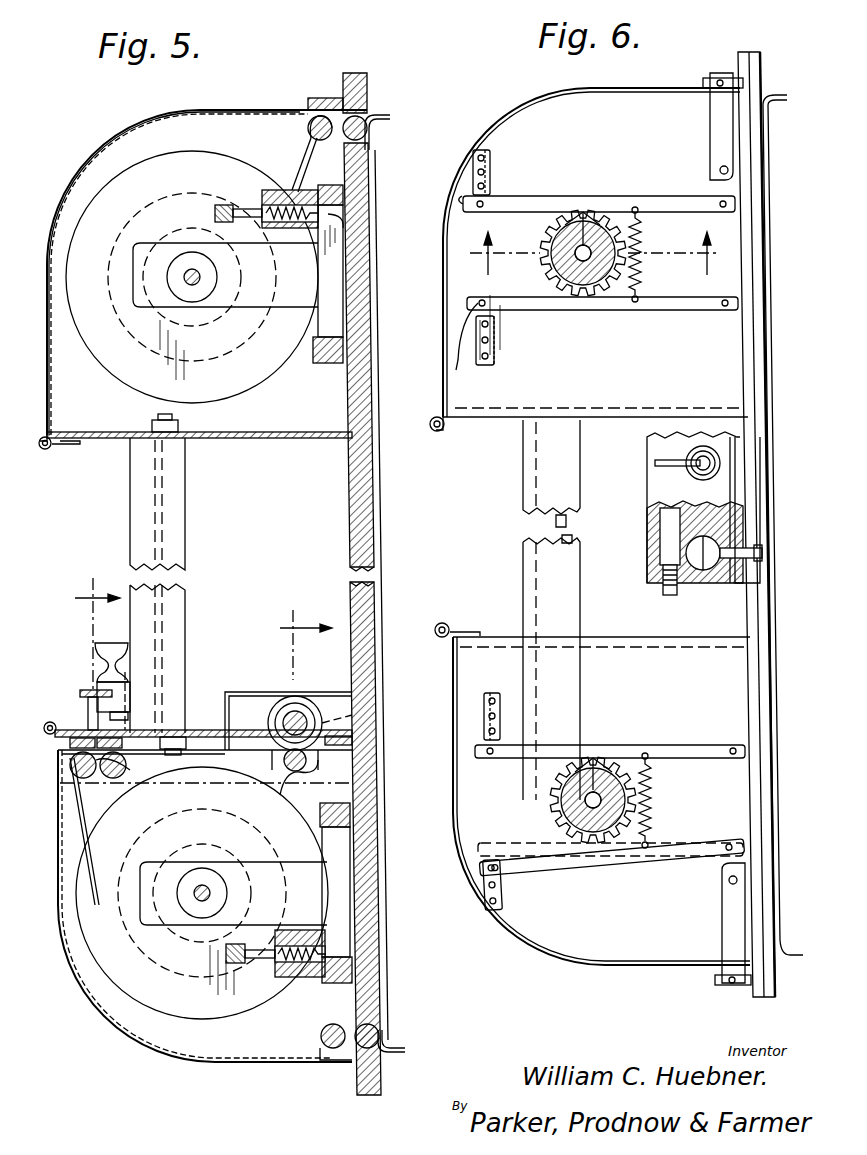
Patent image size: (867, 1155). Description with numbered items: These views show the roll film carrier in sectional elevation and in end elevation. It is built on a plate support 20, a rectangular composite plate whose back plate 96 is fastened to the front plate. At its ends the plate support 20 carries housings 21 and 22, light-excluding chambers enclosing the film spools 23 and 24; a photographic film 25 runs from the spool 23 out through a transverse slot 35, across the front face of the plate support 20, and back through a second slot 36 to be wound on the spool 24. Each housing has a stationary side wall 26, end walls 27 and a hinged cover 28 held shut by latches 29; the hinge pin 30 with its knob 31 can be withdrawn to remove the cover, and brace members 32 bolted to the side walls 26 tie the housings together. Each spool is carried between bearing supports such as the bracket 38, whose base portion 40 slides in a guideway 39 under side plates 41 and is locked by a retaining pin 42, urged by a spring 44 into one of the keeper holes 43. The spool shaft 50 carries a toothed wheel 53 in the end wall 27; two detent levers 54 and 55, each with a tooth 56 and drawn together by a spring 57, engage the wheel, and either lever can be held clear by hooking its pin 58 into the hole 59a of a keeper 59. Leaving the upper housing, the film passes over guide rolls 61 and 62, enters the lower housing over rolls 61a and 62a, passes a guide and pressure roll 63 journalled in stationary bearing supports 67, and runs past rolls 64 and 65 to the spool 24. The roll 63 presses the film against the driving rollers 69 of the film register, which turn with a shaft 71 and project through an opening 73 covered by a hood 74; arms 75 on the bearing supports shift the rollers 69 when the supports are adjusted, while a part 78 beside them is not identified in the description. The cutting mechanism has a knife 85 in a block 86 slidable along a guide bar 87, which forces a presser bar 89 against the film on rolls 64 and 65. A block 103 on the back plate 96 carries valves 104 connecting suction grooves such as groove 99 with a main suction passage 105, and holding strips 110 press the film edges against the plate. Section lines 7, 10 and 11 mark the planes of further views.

In FIG. 6, the section line 7- 7 is at (590, 253).
In FIG. 5, the section line / belt path 10 is at (398, 780).
In FIG. 5, the section line 11- 11 is at (36, 859).
In FIG. 5, the plate support 20 is at (385, 575).
In FIG. 6, the plate support 20 is at (765, 430).
In FIG. 5, the housing 21 is at (95, 158).
In FIG. 5, the housing 22 is at (105, 1012).
In FIG. 5, the roll film spool 23 is at (180, 165).
In FIG. 5, the roll film spool 24 is at (160, 1002).
In FIG. 5, the photographic film 25 is at (298, 145).
In FIG. 5, the side wall 26 is at (234, 440).
In FIG. 6, the end walls 27 is at (560, 120).
In FIG. 5, the cover member 28 is at (150, 118).
In FIG. 6, the cover member 28 is at (520, 107).
In FIG. 6, the latches 29 is at (710, 140).
In FIG. 5, the hinge pin 30 is at (43, 450).
In FIG. 6, the hinge pin 30 is at (437, 432).
In FIG. 5, the knob 31 is at (42, 434).
In FIG. 6, the knob 31 is at (450, 432).
In FIG. 5, the brace members 32 is at (190, 570).
In FIG. 6, the brace members 32 is at (580, 512).
In FIG. 5, the slot 35 is at (378, 112).
In FIG. 5, the slot 36 is at (392, 1040).
In FIG. 5, the bearing support 38 is at (140, 260).
In FIG. 5, the guideway 39 is at (345, 216).
In FIG. 5, the base portion 40 is at (335, 307).
In FIG. 5, the side plates 41 is at (313, 349).
In FIG. 5, the retaining pin 42 is at (248, 205).
In FIG. 5, the keeper holes 43 is at (345, 247).
In FIG. 5, the spring 44 is at (275, 190).
In FIG. 6, the spool shaft 50 is at (565, 258).
In FIG. 6, the toothed wheel 53 is at (555, 222).
In FIG. 6, the detent lever 54 is at (682, 312).
In FIG. 6, the detent lever 55 is at (672, 177).
In FIG. 6, the tooth 56 is at (590, 200).
In FIG. 6, the spring 57 is at (640, 272).
In FIG. 6, the pin 58 is at (463, 204).
In FIG. 6, the keeper 59 is at (475, 152).
In FIG. 6, the bracket slot 59a is at (490, 187).
In FIG. 5, the guide roll 61 is at (323, 140).
In FIG. 5, the guide roll 61a is at (330, 1050).
In FIG. 5, the guide roll 62 is at (370, 128).
In FIG. 5, the guide roll 62a is at (380, 1036).
In FIG. 5, the guide and pressure roll 63 is at (308, 758).
In FIG. 5, the roll 64 is at (110, 772).
In FIG. 5, the roll 65 is at (70, 772).
In FIG. 5, the bearing supports 67 is at (80, 814).
In FIG. 5, the driving rollers 69 is at (310, 700).
In FIG. 5, the shaft 71 is at (298, 710).
In FIG. 5, the opening 73 is at (340, 738).
In FIG. 5, the hood 74 is at (240, 692).
In FIG. 5, the arms 75 is at (275, 777).
In FIG. 5, the belt 78 is at (330, 722).
In FIG. 5, the knife 85 is at (80, 693).
In FIG. 5, the knife block 86 is at (112, 643).
In FIG. 5, the guide bar 87 is at (95, 690).
In FIG. 5, the presser bar 89 is at (70, 746).
In FIG. 6, the back plate 96 is at (760, 622).
In FIG. 6, the suction groove 99 is at (765, 555).
In FIG. 6, the block 103 is at (715, 572).
In FIG. 6, the valve 104 is at (655, 464).
In FIG. 6, the main suction passage 105 is at (655, 557).
In FIG. 6, the holding strips 110 is at (770, 160).